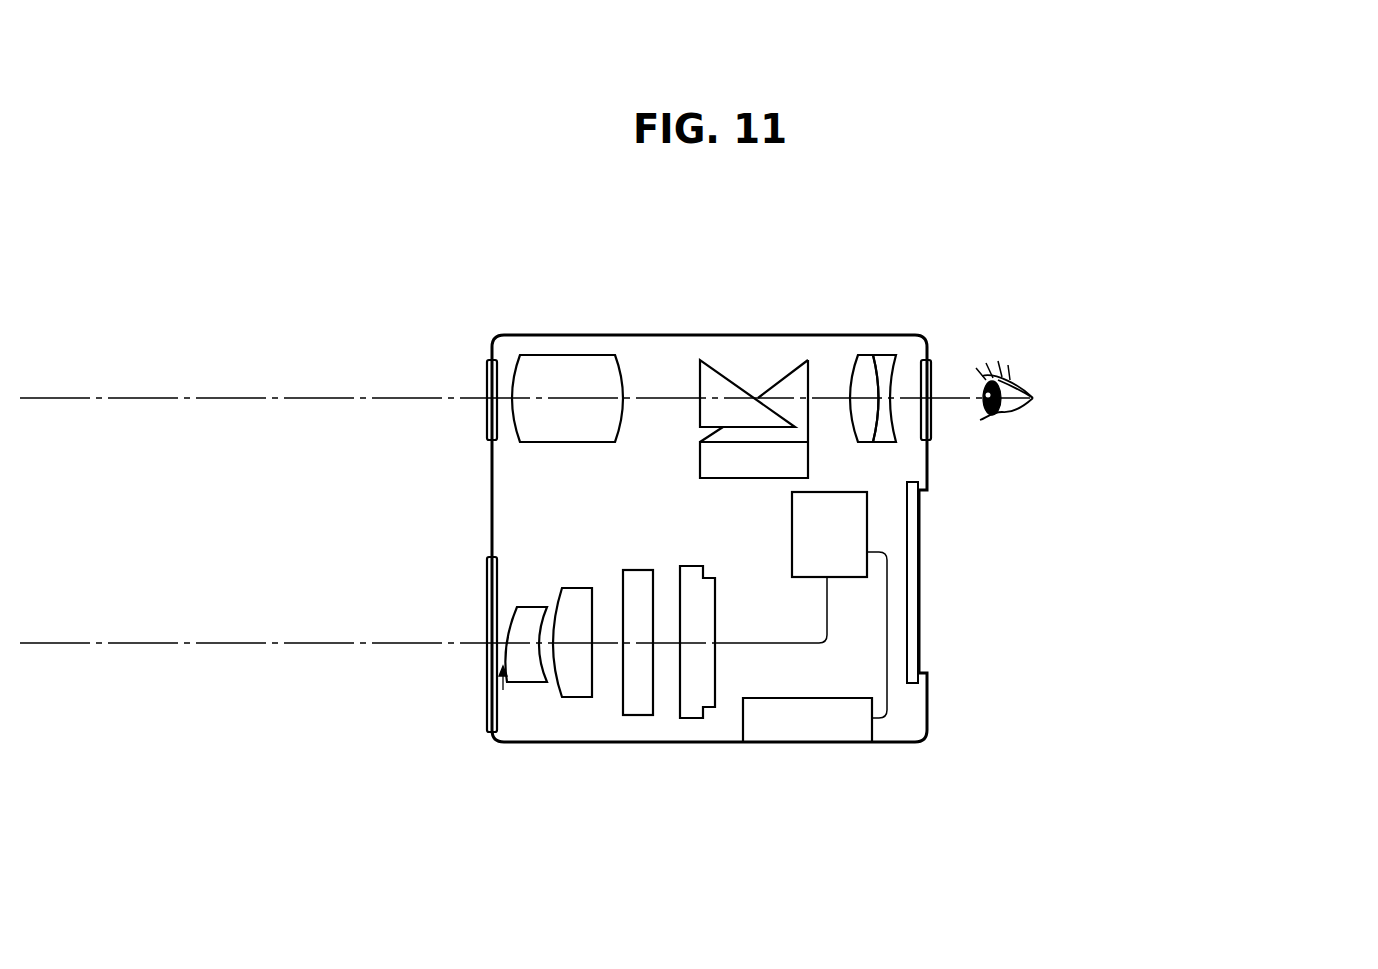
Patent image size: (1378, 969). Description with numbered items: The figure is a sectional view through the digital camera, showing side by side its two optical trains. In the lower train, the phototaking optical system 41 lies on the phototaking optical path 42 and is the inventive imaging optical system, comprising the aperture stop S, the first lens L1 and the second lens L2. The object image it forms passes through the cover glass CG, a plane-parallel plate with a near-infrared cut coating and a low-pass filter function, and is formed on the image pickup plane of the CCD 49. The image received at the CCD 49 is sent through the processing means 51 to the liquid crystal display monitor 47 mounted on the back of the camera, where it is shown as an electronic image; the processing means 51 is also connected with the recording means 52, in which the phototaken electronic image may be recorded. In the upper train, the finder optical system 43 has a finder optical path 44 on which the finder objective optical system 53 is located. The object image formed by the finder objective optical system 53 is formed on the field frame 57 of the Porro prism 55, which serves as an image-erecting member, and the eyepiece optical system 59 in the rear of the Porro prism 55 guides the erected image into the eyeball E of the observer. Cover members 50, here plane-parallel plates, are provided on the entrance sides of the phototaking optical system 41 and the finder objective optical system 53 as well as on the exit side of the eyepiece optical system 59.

The phototaking optical system 41 is at (583, 719).
The phototaking optical path 42 is at (52, 641).
The finder optical system 43 is at (547, 457).
The finder optical path 44 is at (52, 397).
The liquid crystal display monitor 47 is at (918, 602).
The CCD 49 is at (708, 667).
The cover member 50 is at (487, 378).
The processing means 51 is at (792, 530).
The recording means 52 is at (817, 732).
The finder objective optical system 53 is at (566, 355).
The Porro prism 55 is at (790, 374).
The field frame 57 is at (733, 442).
The eyepiece optical system 59 is at (882, 356).
The eyeball E is at (1005, 412).
The aperture stop S is at (503, 618).
The first lens L1 is at (535, 607).
The second lens L2 is at (572, 588).
The cover glass CG is at (639, 570).